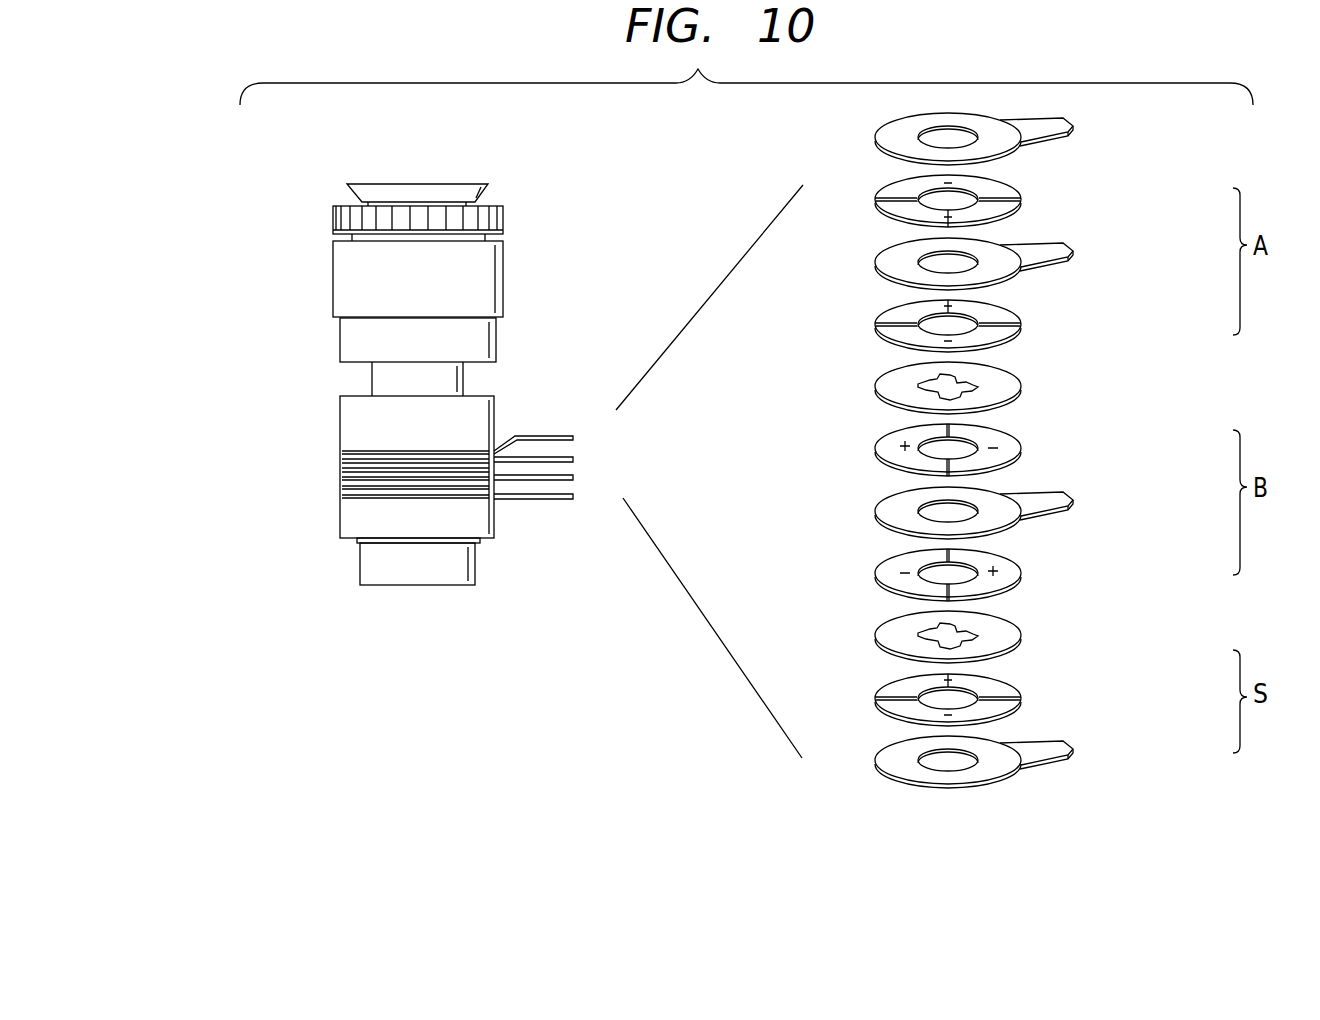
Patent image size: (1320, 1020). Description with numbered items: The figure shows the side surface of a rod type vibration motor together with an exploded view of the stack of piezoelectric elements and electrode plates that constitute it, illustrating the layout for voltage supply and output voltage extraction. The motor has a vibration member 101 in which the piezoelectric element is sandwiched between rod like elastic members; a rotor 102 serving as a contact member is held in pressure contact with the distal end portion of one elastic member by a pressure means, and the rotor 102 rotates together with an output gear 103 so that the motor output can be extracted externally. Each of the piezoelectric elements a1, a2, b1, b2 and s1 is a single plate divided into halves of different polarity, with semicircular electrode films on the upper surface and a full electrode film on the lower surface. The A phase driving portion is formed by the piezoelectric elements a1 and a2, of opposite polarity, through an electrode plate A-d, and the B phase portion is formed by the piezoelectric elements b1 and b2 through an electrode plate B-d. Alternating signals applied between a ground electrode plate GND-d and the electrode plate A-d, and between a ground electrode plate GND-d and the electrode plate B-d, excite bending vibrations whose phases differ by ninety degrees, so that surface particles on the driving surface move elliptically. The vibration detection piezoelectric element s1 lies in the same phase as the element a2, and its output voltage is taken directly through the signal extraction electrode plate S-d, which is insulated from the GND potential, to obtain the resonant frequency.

The vibration member 101 is at (272, 583).
The rotor 102 is at (271, 235).
The output gear 103 is at (316, 214).
The piezoelectric element a1 is at (927, 201).
The piezoelectric element a2 is at (927, 326).
The piezoelectric element b1 is at (927, 450).
The piezoelectric element b2 is at (927, 575).
The vibration detection piezoelectric element s1 is at (927, 700).
The ground electrode plate GND-d is at (1031, 388).
The electrode plate A-d is at (1015, 260).
The electrode plate B-d is at (1014, 508).
The signal extraction electrode plate S-d is at (1014, 762).